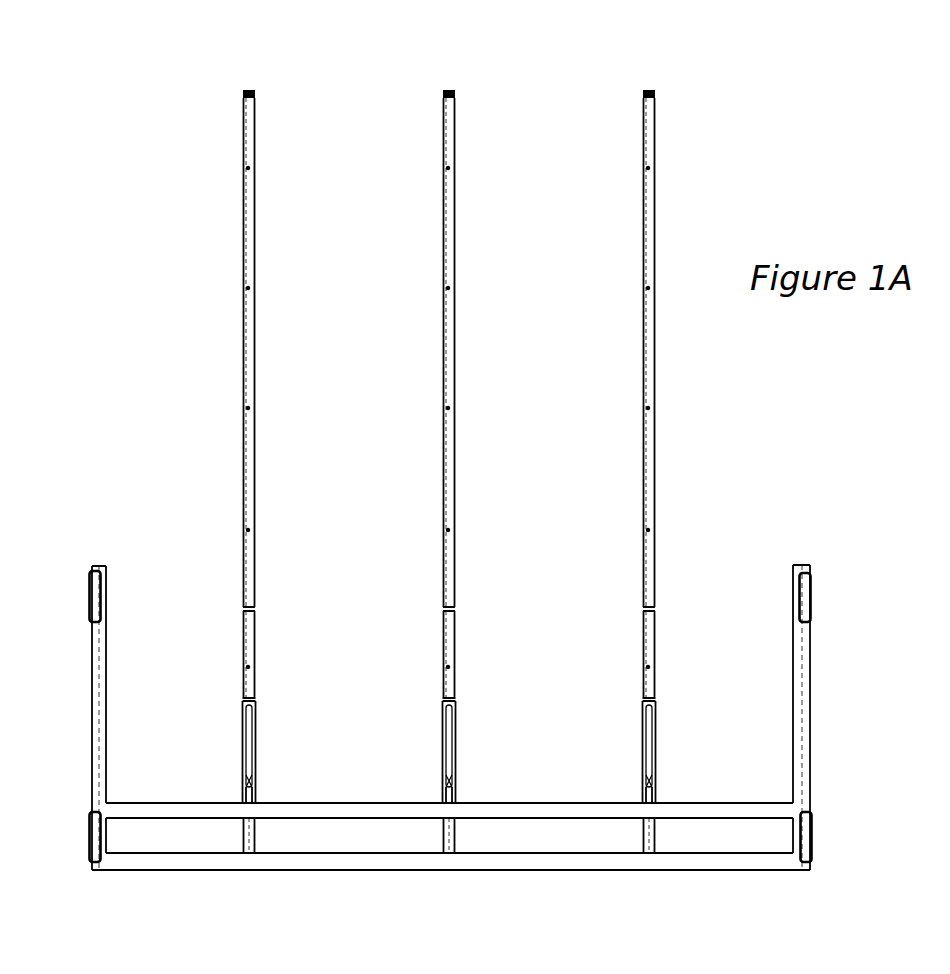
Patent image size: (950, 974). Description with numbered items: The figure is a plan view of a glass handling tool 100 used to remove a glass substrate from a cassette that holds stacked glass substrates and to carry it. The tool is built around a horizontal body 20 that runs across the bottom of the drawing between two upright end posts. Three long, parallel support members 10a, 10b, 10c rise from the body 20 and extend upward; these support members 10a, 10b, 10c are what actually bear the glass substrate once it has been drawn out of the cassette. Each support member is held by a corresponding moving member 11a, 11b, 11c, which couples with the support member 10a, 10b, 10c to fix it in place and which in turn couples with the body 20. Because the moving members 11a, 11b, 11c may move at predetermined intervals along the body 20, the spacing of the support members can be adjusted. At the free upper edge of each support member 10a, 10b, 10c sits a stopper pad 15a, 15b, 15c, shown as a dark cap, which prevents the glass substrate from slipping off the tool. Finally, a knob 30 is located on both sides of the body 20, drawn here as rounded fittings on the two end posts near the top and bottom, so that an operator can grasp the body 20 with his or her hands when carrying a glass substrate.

The glass handling tool 100 is at (143, 134).
The body 20 is at (173, 862).
The knob 30 is at (92, 600).
The support member 10a is at (244, 320).
The support member 10b is at (444, 320).
The support member 10c is at (644, 320).
The moving member 11a is at (244, 655).
The moving member 11b is at (444, 655).
The moving member 11c is at (644, 655).
The stopper pad 15a is at (250, 90).
The stopper pad 15b is at (450, 90).
The stopper pad 15c is at (650, 90).